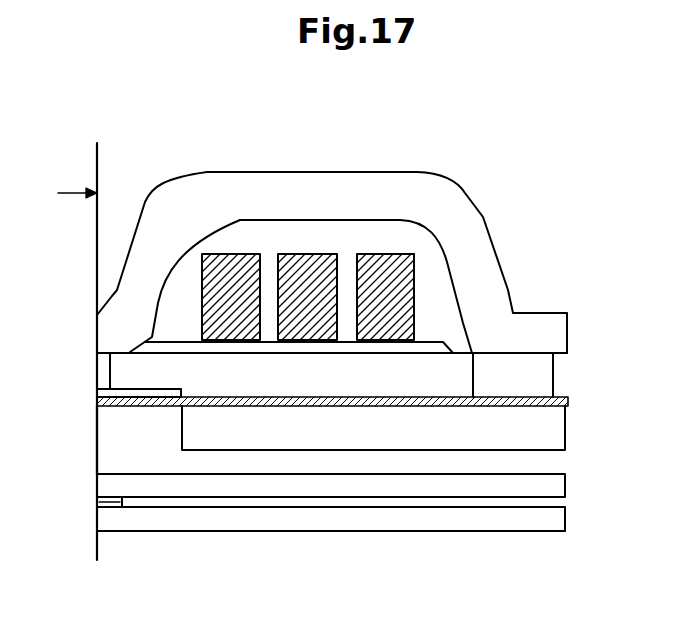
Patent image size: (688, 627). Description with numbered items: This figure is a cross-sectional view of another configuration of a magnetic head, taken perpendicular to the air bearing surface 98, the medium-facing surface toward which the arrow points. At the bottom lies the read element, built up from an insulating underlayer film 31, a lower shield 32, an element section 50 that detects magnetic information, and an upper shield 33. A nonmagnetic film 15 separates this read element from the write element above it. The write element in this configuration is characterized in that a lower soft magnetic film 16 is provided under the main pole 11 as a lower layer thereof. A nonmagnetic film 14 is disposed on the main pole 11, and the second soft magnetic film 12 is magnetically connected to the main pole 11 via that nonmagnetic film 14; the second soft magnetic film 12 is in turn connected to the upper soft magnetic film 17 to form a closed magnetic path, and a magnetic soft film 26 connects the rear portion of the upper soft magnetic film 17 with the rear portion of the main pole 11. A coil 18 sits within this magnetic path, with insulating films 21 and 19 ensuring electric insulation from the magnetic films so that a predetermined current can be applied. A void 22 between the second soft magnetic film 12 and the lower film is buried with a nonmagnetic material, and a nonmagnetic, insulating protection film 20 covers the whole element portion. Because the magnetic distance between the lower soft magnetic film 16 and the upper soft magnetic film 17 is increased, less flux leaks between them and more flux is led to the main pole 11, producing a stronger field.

The main pole 11 is at (547, 408).
The second soft magnetic film 12 is at (103, 372).
The nonmagnetic film 14 is at (97, 392).
The nonmagnetic film 15 is at (103, 452).
The lower soft magnetic film 16 is at (465, 428).
The upper soft magnetic film 17 is at (480, 277).
The coil 18 is at (417, 263).
The insulating film 19 is at (400, 237).
The protection film 20 is at (103, 246).
The insulating film 21 is at (445, 343).
The void 22 is at (448, 378).
The magnetic soft film 26 is at (517, 380).
The insulating film 31 is at (408, 545).
The lower shield 32 is at (530, 527).
The upper shield 33 is at (548, 490).
The element section 50 is at (108, 507).
The air bearing surface 98 is at (63, 196).